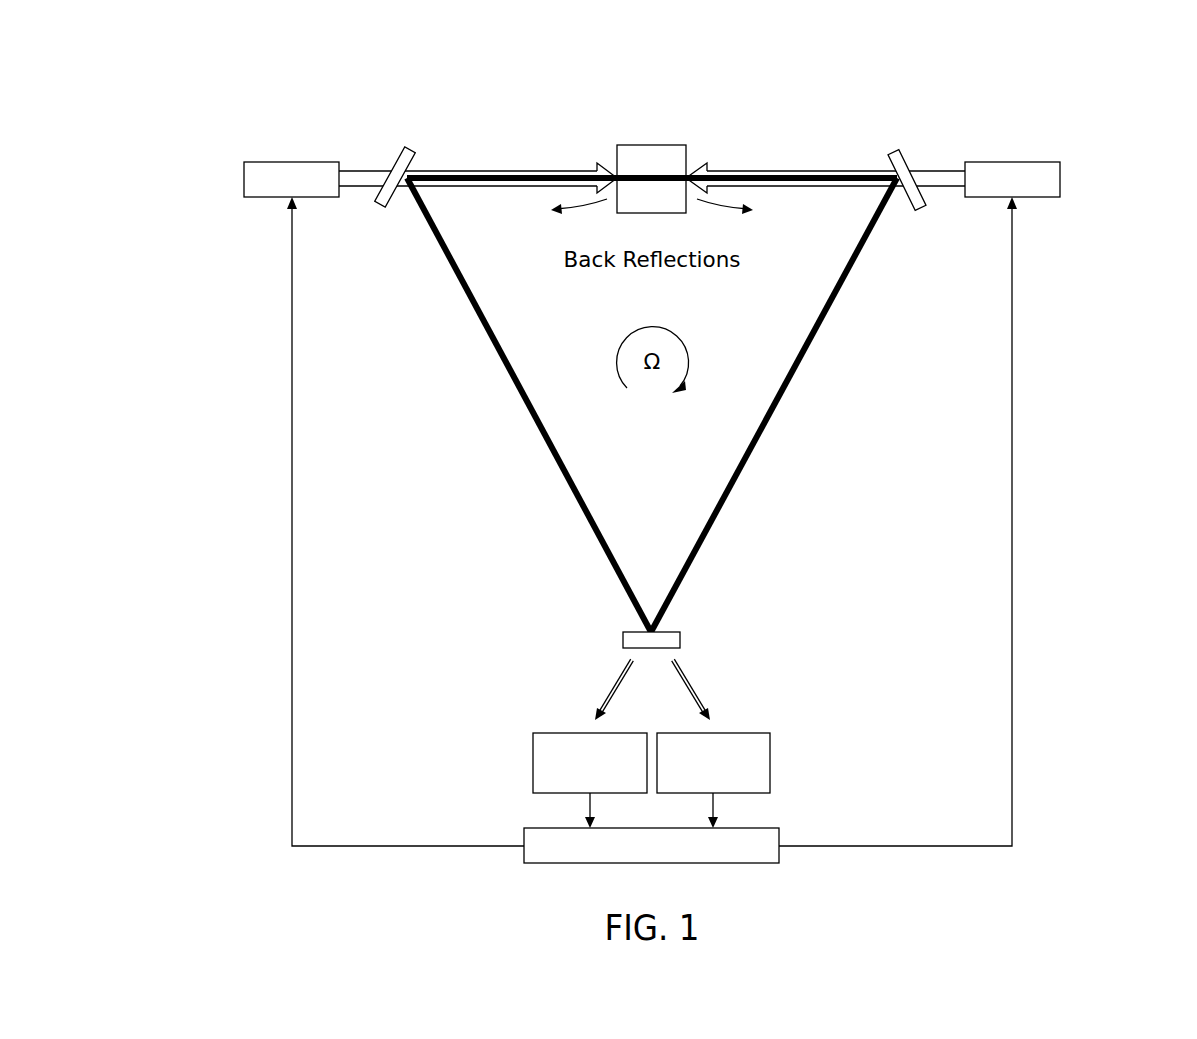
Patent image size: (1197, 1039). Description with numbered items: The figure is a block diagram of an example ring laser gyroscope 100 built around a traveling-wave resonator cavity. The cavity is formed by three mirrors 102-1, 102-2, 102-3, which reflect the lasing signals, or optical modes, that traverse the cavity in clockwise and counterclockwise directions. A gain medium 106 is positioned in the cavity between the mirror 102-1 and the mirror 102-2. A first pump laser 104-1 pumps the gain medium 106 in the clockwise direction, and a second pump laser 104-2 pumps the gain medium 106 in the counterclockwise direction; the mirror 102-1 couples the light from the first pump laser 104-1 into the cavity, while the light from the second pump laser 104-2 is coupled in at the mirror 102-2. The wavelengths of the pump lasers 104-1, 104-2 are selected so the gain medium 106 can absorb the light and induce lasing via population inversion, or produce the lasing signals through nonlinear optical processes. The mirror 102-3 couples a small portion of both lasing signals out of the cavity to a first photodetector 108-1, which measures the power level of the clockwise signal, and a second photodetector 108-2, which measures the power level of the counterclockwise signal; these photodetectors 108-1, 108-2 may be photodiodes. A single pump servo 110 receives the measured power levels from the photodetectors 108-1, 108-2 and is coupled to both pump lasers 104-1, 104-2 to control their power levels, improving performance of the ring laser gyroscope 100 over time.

The ring laser gyroscope 100 is at (277, 49).
The mirror 102-1 is at (379, 202).
The mirror 102-2 is at (921, 207).
The mirror 102-3 is at (623, 640).
The first pump laser 104-1 is at (244, 178).
The second pump laser 104-2 is at (1060, 178).
The gain medium 106 is at (655, 145).
The first photodetector 108-1 is at (533, 762).
The second photodetector 108-2 is at (770, 762).
The pump servo 110 is at (779, 838).